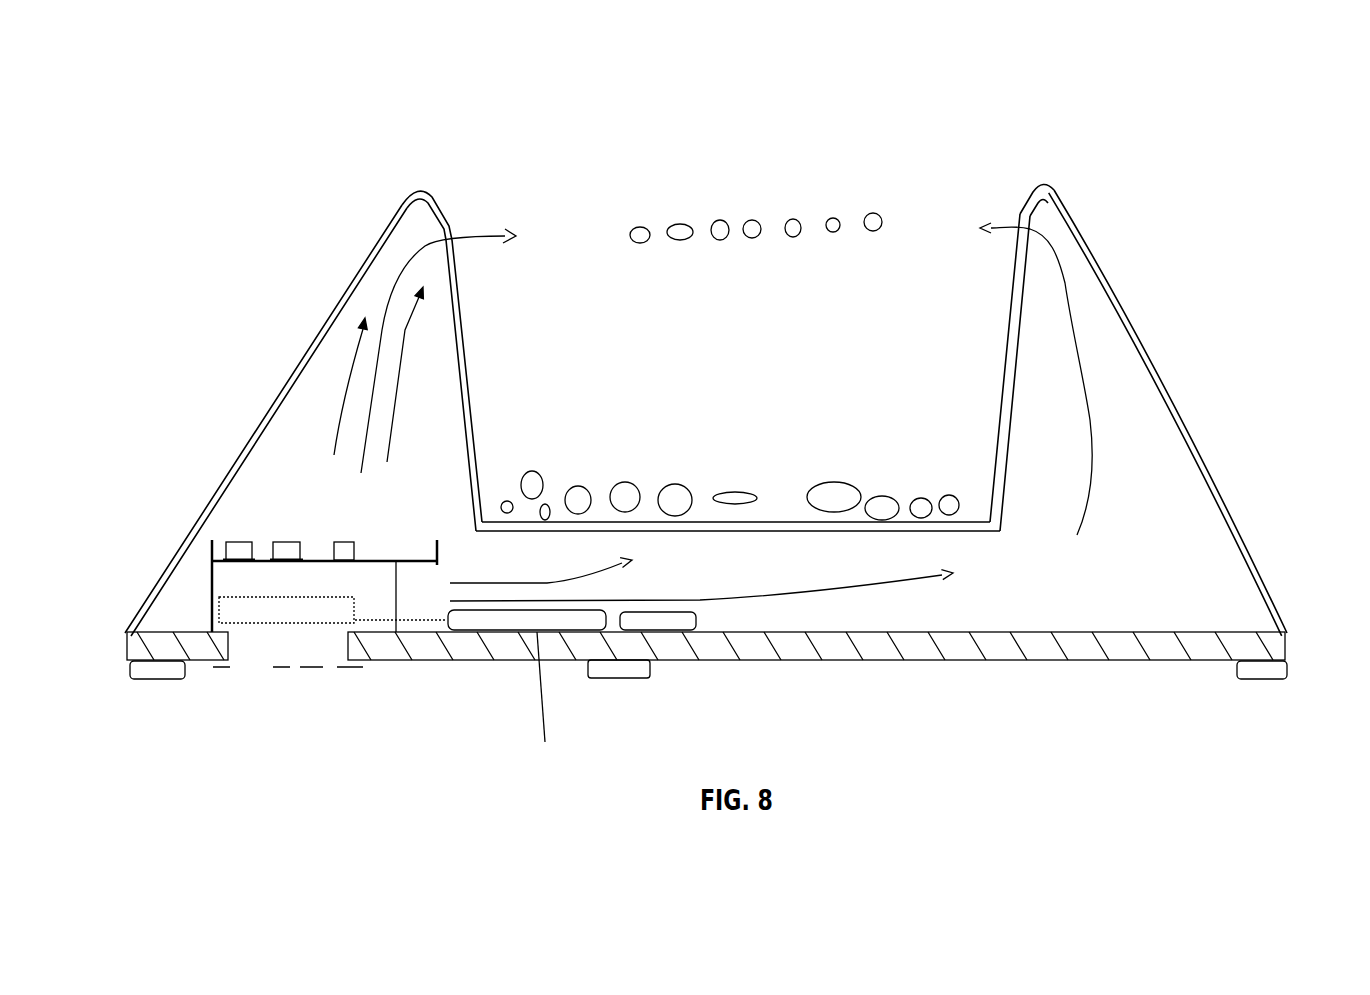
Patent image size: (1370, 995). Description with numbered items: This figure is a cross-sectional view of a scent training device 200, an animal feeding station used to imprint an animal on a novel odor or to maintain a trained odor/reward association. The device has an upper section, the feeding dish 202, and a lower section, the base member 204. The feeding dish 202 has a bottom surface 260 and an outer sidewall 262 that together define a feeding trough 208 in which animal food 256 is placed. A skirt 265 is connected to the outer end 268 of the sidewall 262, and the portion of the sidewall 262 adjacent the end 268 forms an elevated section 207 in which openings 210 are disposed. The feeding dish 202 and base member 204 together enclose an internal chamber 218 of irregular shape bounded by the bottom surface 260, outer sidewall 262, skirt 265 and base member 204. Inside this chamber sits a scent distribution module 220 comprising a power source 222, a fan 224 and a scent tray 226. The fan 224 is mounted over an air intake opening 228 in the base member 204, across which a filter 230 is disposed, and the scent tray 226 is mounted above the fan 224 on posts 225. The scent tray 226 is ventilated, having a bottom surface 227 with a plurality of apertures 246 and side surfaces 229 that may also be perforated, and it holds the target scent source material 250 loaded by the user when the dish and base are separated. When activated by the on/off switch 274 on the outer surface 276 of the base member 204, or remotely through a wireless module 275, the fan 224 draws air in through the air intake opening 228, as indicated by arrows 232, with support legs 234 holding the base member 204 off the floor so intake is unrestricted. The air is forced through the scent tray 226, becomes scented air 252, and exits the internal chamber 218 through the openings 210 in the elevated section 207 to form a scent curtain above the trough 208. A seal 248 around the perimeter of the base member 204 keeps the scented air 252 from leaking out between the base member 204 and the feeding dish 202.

The scent training device 200 is at (403, 148).
The feeding dish 202 is at (1226, 391).
The base member 204 is at (965, 662).
The elevated section 207 is at (372, 192).
The feeding trough 208 is at (730, 359).
The openings 210 is at (480, 205).
The internal chamber 218 is at (1175, 610).
The scent distribution module 220 is at (256, 518).
The power source 222 is at (552, 708).
The fan 224 is at (217, 630).
The posts 225 is at (260, 612).
The scent tray 226 is at (450, 542).
The bottom surface 227 is at (401, 596).
The air intake opening 228 is at (352, 699).
The side surfaces 229 is at (458, 562).
The filter 230 is at (257, 665).
The arrows 232 is at (272, 699).
The support legs 234 is at (118, 672).
The apertures 246 is at (322, 580).
The seal 248 is at (130, 633).
The scent source material 250 is at (358, 554).
The scented air 252 is at (382, 380).
The animal food 256 is at (967, 504).
The bottom surface 260 is at (779, 521).
The outer sidewall 262 is at (470, 370).
The skirt 265 is at (310, 339).
The end 268 is at (428, 188).
The on/off switch 274 is at (633, 680).
The module 275 is at (700, 622).
The outer surface 276 is at (870, 662).